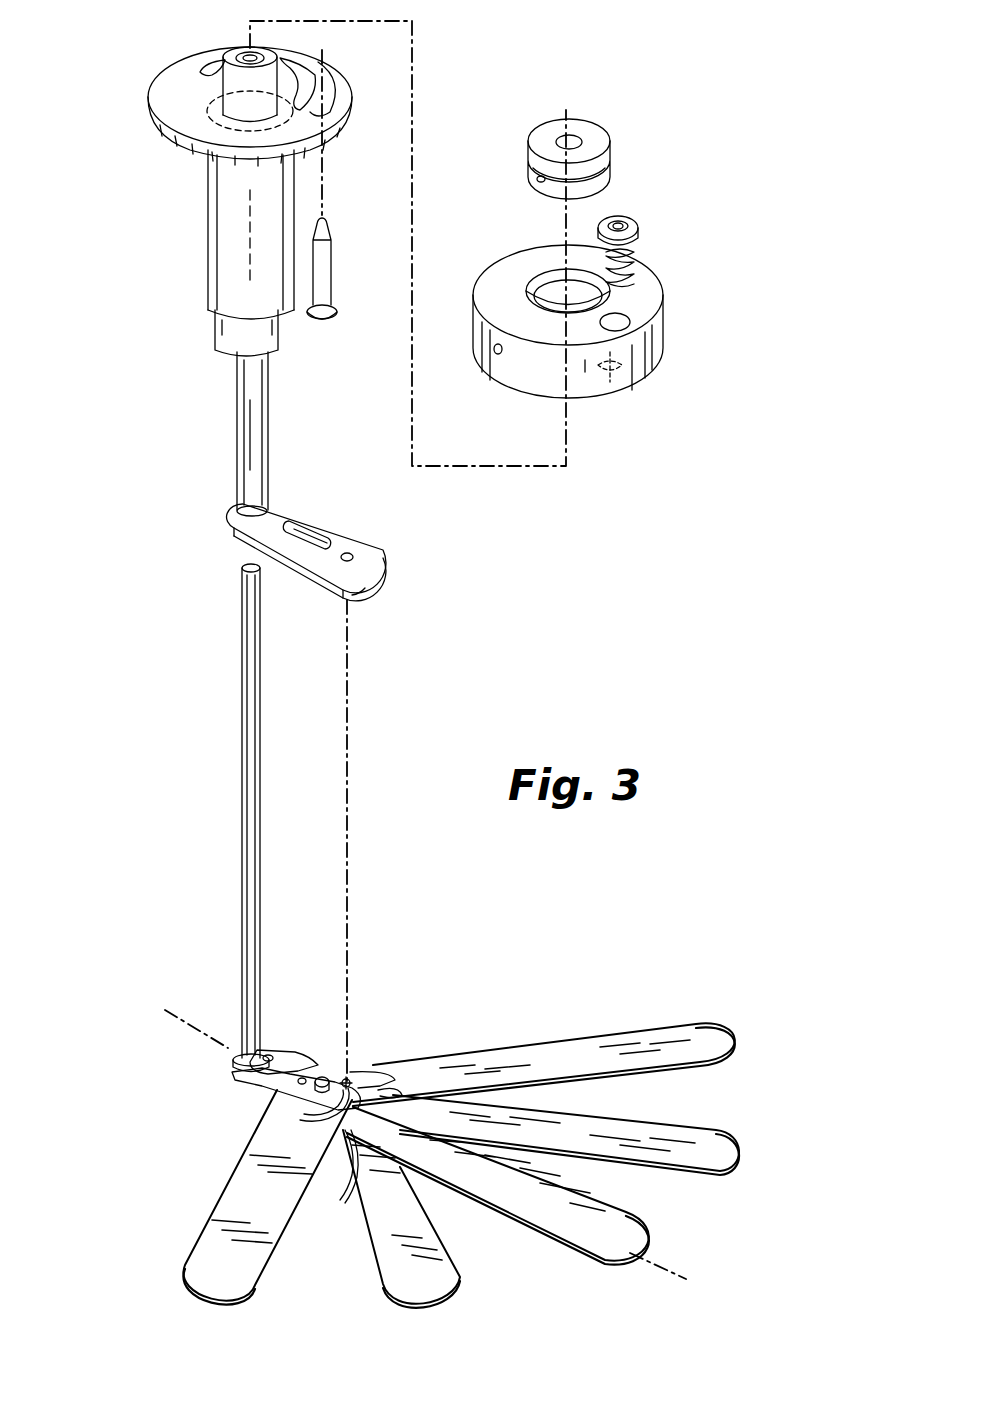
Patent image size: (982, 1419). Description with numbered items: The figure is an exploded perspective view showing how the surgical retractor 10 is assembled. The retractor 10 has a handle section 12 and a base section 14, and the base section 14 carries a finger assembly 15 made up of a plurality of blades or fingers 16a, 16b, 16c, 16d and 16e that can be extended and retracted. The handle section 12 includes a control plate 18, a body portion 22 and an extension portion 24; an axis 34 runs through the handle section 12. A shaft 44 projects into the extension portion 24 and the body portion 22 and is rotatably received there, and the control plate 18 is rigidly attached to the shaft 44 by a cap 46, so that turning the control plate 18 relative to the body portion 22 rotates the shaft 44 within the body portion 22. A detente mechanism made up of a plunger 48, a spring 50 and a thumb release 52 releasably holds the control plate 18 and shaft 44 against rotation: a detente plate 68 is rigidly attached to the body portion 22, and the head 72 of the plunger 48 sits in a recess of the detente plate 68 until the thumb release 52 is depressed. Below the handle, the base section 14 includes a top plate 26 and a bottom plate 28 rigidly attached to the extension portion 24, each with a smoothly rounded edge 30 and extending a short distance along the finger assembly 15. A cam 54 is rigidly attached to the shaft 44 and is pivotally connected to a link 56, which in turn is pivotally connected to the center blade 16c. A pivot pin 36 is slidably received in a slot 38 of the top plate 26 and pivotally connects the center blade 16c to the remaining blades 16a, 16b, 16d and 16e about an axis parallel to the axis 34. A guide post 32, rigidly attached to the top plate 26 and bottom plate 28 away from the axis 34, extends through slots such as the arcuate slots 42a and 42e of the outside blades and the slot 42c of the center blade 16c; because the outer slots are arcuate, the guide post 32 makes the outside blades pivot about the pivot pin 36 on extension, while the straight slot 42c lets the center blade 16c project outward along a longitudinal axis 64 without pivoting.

The surgical retractor 10 is at (656, 514).
The handle section 12 is at (178, 212).
The base section 14 is at (152, 992).
The finger assembly 15 is at (600, 1010).
The blade 16a is at (198, 1254).
The blade 16b is at (395, 1272).
The center blade 16c is at (580, 1240).
The blade 16d is at (674, 1160).
The blade 16e is at (698, 1060).
The control plate 18 is at (648, 300).
The body portion 22 is at (235, 288).
The extension portion 24 is at (245, 430).
The top plate 26 is at (326, 538).
The bottom plate 28 is at (236, 1084).
The rounded edge 30 is at (372, 578).
The guide post 32 is at (362, 1082).
The axis 34 is at (250, 20).
The pivot pin 36 is at (325, 1078).
The slot 38 is at (308, 524).
The slot 42a is at (300, 1118).
The slot 42c is at (343, 1195).
The slot 42e is at (440, 1040).
The shaft 44 is at (245, 768).
The cap 46 is at (588, 135).
The plunger 48 is at (330, 270).
The spring 50 is at (640, 262).
The thumb release 52 is at (630, 218).
The cam 54 is at (228, 1060).
The link 56 is at (278, 1066).
The longitudinal axis 64 is at (728, 1302).
The detente plate 68 is at (180, 95).
The head 72 is at (328, 320).